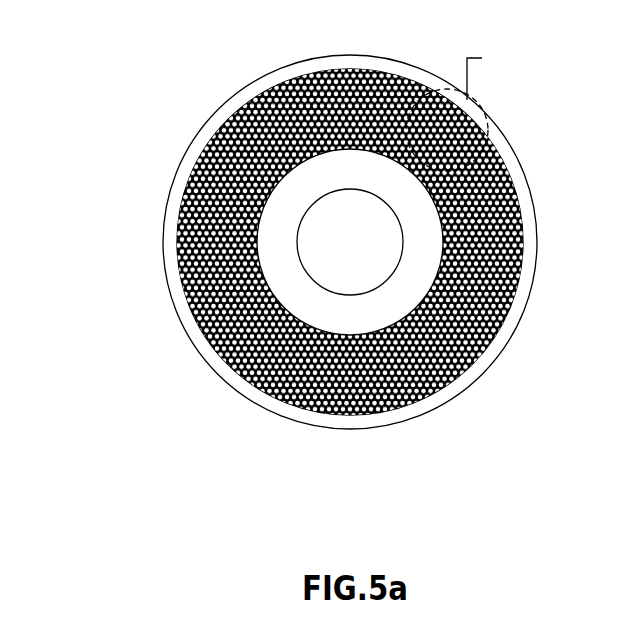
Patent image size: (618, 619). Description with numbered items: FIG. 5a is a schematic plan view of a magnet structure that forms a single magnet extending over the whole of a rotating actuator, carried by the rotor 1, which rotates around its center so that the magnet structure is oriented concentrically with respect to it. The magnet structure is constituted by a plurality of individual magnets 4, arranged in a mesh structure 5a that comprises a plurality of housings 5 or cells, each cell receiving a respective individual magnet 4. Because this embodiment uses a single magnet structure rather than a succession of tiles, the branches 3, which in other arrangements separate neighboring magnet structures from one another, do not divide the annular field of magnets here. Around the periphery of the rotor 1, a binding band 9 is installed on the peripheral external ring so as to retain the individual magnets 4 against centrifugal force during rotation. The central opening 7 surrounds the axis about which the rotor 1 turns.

The rotor 1 is at (322, 265).
The branches 3 is at (243, 186).
The individual magnets 4 is at (295, 258).
The housings 5 is at (394, 62).
The mesh structure 5a is at (420, 100).
The central channel 7 is at (448, 284).
The binding band 9 is at (290, 242).